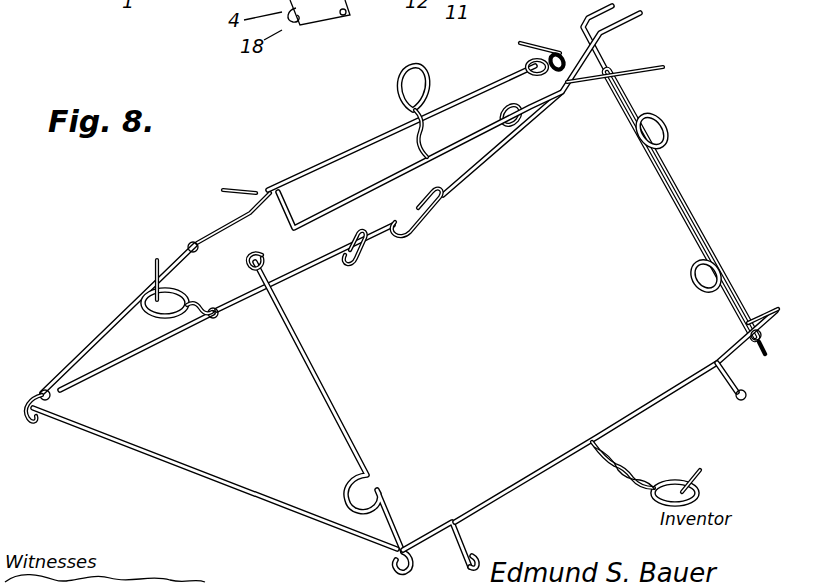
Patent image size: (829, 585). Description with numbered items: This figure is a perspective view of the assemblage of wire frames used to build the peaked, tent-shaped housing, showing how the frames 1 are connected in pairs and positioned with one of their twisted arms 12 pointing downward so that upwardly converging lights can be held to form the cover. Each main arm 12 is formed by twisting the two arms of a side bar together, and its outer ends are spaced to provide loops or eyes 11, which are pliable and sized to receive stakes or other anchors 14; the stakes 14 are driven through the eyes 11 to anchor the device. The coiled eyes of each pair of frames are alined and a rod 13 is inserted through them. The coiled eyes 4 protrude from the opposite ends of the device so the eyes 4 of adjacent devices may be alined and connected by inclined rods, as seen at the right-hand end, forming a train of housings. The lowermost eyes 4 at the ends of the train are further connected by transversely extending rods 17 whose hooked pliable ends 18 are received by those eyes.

The frame 1 is at (93, 338).
The eyes 4 is at (242, 252).
The loops or eyes 11 is at (143, 313).
The main arm 12 is at (197, 302).
The rod 13 is at (352, 167).
The stakes or anchors 14 is at (158, 258).
The transversely extending rods 17 is at (203, 480).
The hooked pliable ends 18 is at (29, 432).